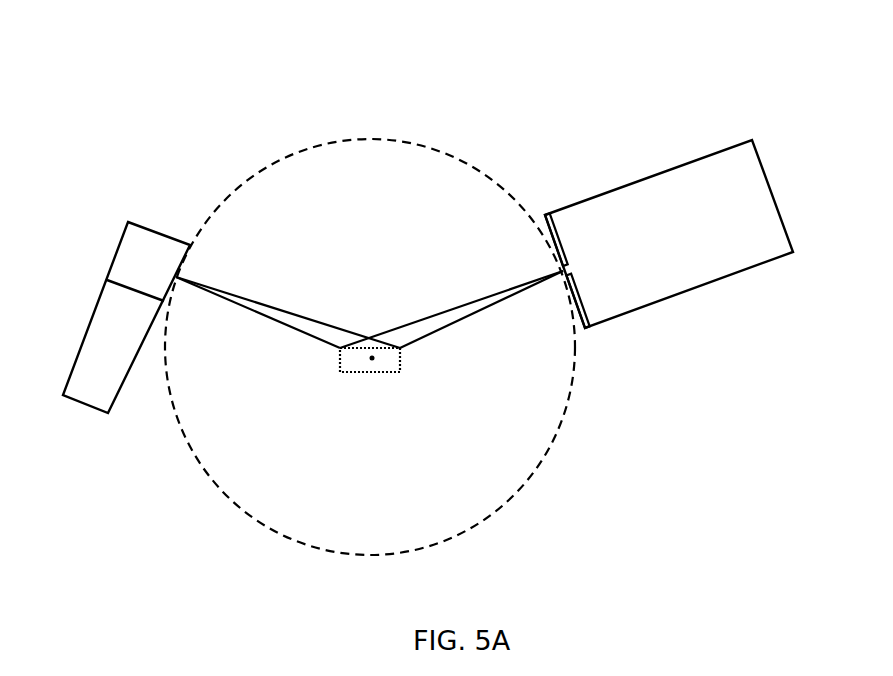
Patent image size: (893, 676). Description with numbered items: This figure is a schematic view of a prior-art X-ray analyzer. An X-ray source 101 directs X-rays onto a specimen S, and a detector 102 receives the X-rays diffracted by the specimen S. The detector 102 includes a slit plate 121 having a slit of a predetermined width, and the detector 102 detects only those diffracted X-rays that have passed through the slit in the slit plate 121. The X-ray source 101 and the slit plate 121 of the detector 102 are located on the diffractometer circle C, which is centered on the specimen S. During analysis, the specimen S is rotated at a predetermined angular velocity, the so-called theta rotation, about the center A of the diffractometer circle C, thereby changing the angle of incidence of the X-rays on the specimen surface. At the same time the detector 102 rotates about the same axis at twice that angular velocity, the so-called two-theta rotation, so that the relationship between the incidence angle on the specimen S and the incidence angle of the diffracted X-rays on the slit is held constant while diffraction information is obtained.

The X-ray source 101 is at (150, 228).
The detector 102 is at (638, 180).
The slit plate 121 is at (583, 307).
The diffractometer circle C is at (311, 148).
The center of the diffractometer circle A is at (368, 357).
The specimen S is at (395, 372).